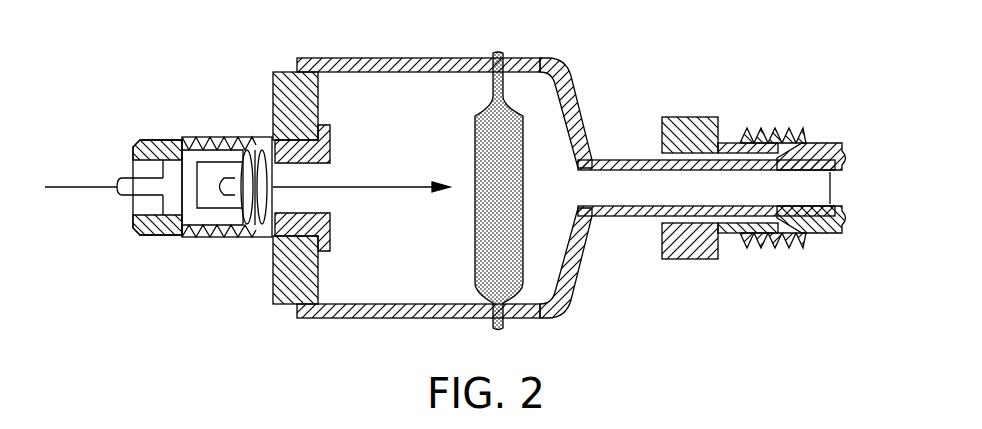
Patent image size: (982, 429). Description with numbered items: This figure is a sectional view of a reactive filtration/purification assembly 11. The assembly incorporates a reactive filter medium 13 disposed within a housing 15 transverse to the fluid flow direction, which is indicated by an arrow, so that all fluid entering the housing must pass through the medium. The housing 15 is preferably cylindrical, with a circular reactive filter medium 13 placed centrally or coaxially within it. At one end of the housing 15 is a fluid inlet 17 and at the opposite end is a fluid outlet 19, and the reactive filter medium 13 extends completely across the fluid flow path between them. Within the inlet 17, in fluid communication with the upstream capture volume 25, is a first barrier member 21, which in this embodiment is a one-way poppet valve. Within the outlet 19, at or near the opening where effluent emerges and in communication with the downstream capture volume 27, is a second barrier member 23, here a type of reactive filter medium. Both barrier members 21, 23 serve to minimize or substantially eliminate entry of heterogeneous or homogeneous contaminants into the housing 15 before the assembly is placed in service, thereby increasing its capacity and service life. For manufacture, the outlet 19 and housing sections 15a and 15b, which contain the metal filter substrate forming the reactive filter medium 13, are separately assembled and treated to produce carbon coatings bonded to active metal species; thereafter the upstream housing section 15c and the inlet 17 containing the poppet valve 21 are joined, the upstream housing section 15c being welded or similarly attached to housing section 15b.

The reactive filtration/purification assembly 11 is at (644, 80).
The reactive filter medium 13 is at (524, 135).
The housing 15 is at (440, 318).
The housing section 15a is at (525, 58).
The housing section 15b is at (405, 58).
The upstream housing section 15c is at (272, 97).
The fluid inlet 17 is at (165, 232).
The fluid outlet 19 is at (631, 220).
The first barrier member 21 is at (236, 215).
The second barrier member 23 is at (832, 190).
The upstream capture volume 25 is at (445, 269).
The downstream capture volume 27 is at (565, 226).